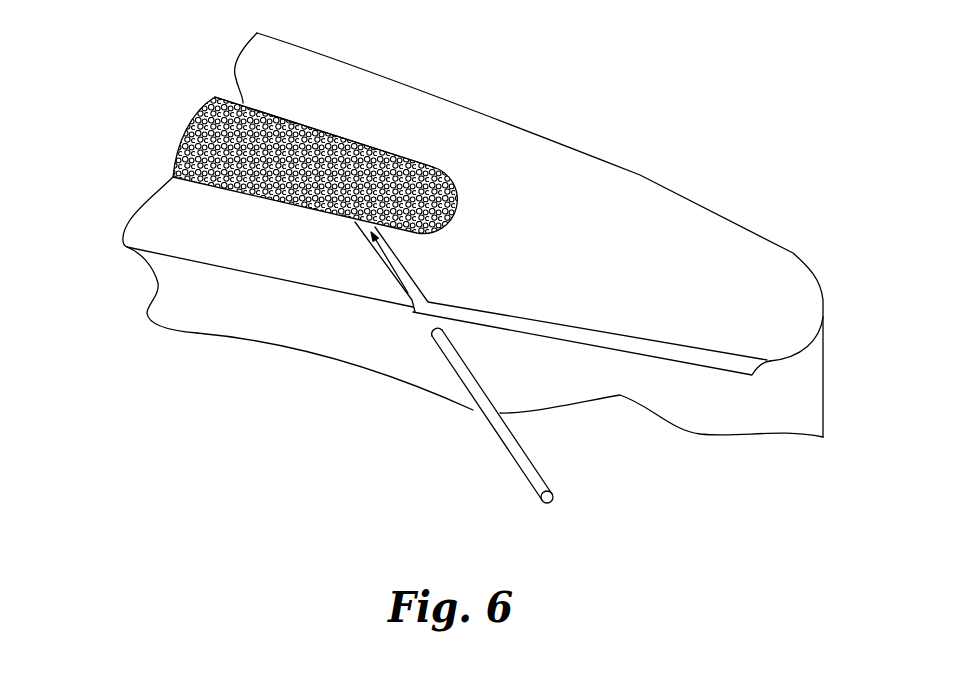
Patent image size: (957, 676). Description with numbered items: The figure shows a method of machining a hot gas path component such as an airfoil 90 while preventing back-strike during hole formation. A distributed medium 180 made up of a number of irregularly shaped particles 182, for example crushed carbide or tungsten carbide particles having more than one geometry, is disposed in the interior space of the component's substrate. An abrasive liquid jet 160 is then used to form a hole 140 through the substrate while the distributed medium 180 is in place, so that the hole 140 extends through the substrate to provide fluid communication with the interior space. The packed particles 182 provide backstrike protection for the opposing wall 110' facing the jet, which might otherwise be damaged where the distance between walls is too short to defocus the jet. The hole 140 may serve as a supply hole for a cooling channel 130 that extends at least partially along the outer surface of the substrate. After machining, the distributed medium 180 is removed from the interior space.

The airfoil 90 is at (697, 203).
The opposing wall 110' is at (315, 130).
The cooling channel 130 is at (672, 360).
The hole 140 is at (417, 310).
The abrasive liquid jet 160 is at (507, 443).
The distributed medium 180 is at (210, 127).
The irregularly shaped particles 182 is at (230, 103).